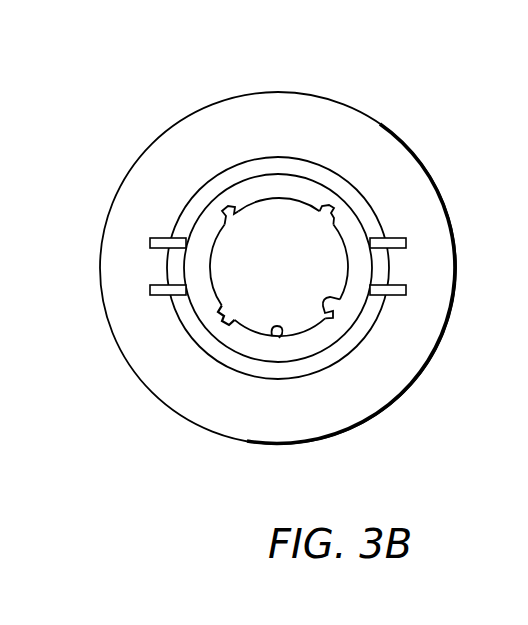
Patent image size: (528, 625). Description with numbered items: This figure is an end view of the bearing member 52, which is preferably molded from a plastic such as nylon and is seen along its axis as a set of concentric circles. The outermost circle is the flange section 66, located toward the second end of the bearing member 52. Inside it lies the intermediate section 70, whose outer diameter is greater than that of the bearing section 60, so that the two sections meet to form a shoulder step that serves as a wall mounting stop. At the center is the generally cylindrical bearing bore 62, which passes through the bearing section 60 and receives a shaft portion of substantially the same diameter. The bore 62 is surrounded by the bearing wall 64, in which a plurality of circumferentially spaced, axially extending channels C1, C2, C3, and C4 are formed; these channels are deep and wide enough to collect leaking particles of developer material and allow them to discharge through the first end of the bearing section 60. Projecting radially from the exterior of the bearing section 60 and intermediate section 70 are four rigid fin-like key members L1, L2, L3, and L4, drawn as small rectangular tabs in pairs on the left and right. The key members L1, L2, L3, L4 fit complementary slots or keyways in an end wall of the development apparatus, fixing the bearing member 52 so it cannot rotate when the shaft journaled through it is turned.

The bearing member 52 is at (192, 68).
The flange section 66 is at (147, 191).
The intermediate section 70 is at (352, 180).
The bearing section 60 is at (352, 330).
The bearing bore 62 is at (292, 293).
The bearing wall 64 is at (279, 338).
The key member L1 is at (148, 243).
The key member L2 is at (150, 292).
The key member L3 is at (406, 240).
The key member L4 is at (407, 291).
The channel C1 is at (236, 213).
The channel C2 is at (331, 222).
The channel C3 is at (333, 300).
The channel C4 is at (228, 322).